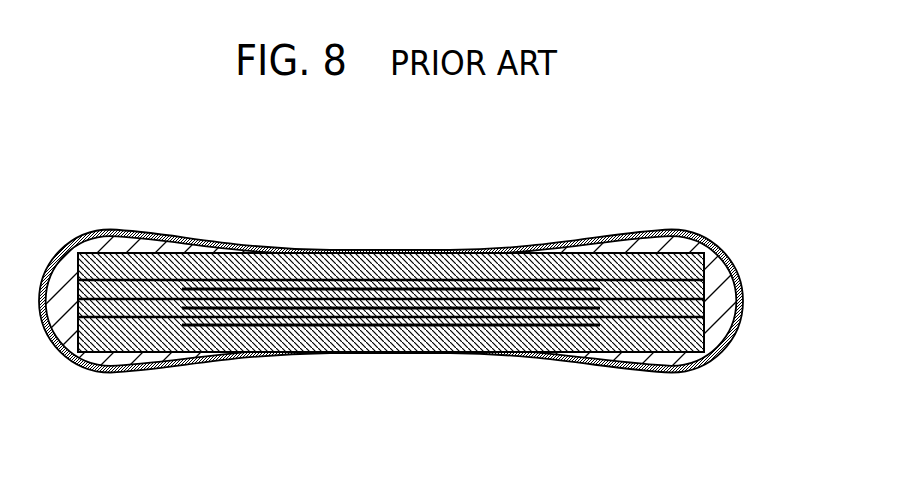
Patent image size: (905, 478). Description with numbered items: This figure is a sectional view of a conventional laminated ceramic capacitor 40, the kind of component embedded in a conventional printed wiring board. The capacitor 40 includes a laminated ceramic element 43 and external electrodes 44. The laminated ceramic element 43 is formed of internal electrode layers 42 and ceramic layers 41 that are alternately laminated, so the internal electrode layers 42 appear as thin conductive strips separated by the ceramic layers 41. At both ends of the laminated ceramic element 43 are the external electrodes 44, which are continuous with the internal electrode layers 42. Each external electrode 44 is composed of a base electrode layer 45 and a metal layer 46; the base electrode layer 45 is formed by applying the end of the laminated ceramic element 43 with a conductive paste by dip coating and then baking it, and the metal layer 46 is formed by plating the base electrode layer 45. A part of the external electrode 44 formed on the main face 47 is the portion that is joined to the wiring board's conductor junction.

The laminated ceramic capacitor 40 is at (580, 185).
The ceramic layers 41 is at (123, 290).
The internal electrode layers 42 is at (142, 317).
The laminated ceramic element 43 is at (350, 335).
The external electrodes 44 is at (803, 200).
The base electrode layer 45 is at (725, 293).
The metal layer 46 is at (723, 255).
The main face 47 is at (453, 353).